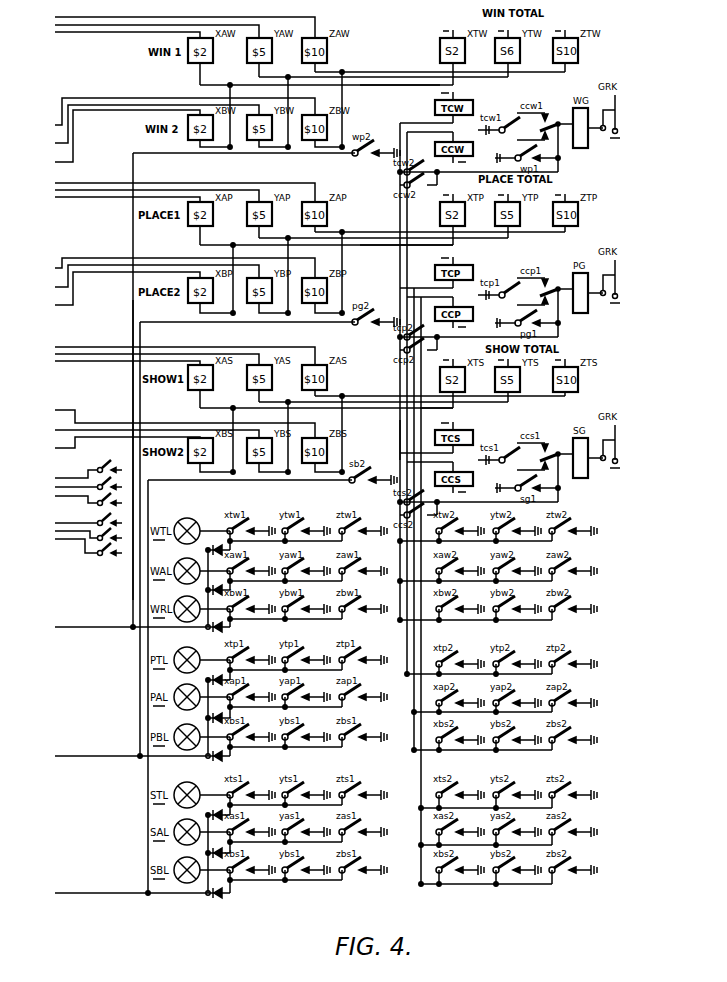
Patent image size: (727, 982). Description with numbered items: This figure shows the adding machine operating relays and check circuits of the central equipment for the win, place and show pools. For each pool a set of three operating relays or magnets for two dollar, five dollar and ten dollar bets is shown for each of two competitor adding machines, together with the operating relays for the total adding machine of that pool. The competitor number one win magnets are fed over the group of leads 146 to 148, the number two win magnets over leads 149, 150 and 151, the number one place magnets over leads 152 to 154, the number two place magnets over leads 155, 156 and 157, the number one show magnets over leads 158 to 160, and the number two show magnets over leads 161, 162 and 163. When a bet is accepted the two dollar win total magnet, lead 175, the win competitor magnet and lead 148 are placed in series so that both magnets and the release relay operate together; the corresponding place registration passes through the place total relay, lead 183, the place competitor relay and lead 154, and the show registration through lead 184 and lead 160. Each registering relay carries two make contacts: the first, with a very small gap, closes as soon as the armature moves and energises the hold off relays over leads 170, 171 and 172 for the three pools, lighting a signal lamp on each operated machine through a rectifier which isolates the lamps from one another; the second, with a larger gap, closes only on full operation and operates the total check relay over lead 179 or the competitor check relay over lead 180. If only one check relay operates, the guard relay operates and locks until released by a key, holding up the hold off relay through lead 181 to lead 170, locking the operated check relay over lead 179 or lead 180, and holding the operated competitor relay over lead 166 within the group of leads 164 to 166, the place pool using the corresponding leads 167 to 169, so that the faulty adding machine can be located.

The win competitor No. 1 adding machine lead 146 is at (55, 36).
The lead 148 is at (140, 37).
The win competitor No. 2 adding machine lead 149 is at (168, 116).
The win competitor No. 2 adding machine lead 150 is at (140, 127).
The win competitor No. 2 adding machine lead 151 is at (111, 139).
The place competitor No. 1 adding machine lead 152 is at (55, 201).
The lead 154 is at (140, 202).
The place competitor No. 2 adding machine lead 155 is at (168, 267).
The place competitor No. 2 adding machine lead 156 is at (140, 279).
The place competitor No. 2 adding machine lead 157 is at (111, 292).
The show competitor No. 1 adding machine lead 158 is at (55, 365).
The lead 160 is at (140, 366).
The show competitor No. 2 adding machine lead 161 is at (168, 419).
The show competitor No. 2 adding machine lead 162 is at (140, 428).
The show competitor No. 2 adding machine lead 163 is at (111, 447).
The guard relay contact lead 164 is at (55, 500).
The lead 166 is at (76, 492).
The guard relay contact lead 167 is at (55, 547).
The guard relay contact lead 169 is at (74, 541).
The hold off relay lead 170 is at (116, 627).
The hold off relay lead 171 is at (116, 757).
The hold off relay lead 172 is at (116, 892).
The lead 175 is at (407, 87).
The lead 179 is at (392, 439).
The lead 180 is at (393, 255).
The lead 181 is at (283, 156).
The lead 183 is at (440, 247).
The lead 184 is at (463, 419).